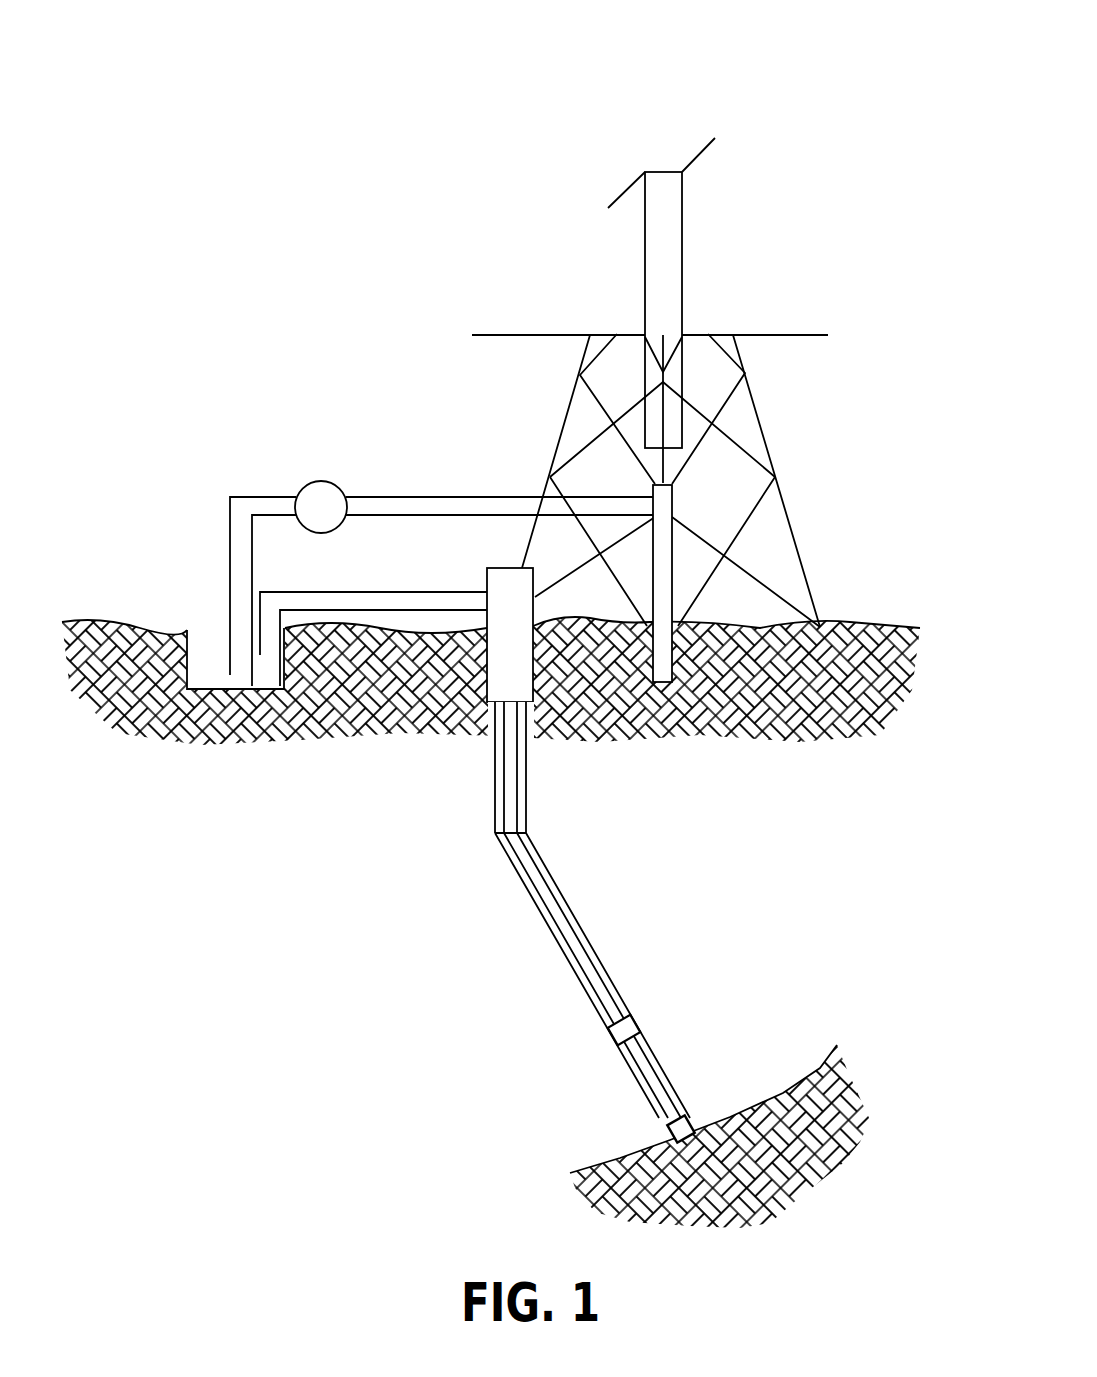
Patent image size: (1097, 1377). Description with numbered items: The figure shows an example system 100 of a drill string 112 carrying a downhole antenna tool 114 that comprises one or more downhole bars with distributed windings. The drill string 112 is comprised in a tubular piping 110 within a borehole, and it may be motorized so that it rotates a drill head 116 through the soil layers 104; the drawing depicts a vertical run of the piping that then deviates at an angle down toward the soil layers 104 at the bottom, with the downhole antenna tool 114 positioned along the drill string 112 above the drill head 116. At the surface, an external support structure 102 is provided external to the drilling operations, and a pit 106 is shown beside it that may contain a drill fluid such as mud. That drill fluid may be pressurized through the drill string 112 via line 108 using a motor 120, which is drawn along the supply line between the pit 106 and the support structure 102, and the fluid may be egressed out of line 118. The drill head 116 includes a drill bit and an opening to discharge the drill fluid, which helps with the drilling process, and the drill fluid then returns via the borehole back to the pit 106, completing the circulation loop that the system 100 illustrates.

The system 100 is at (892, 106).
The external support structure 102 is at (523, 417).
The soil layers 104 is at (118, 643).
The pit 106 is at (217, 641).
The line 108 is at (243, 673).
The tubular piping 110 is at (494, 791).
The drill string 112 is at (520, 868).
The downhole antenna tool 114 is at (612, 1027).
The drill head 116 is at (667, 1122).
The line 118 is at (277, 657).
The motor 120 is at (310, 492).